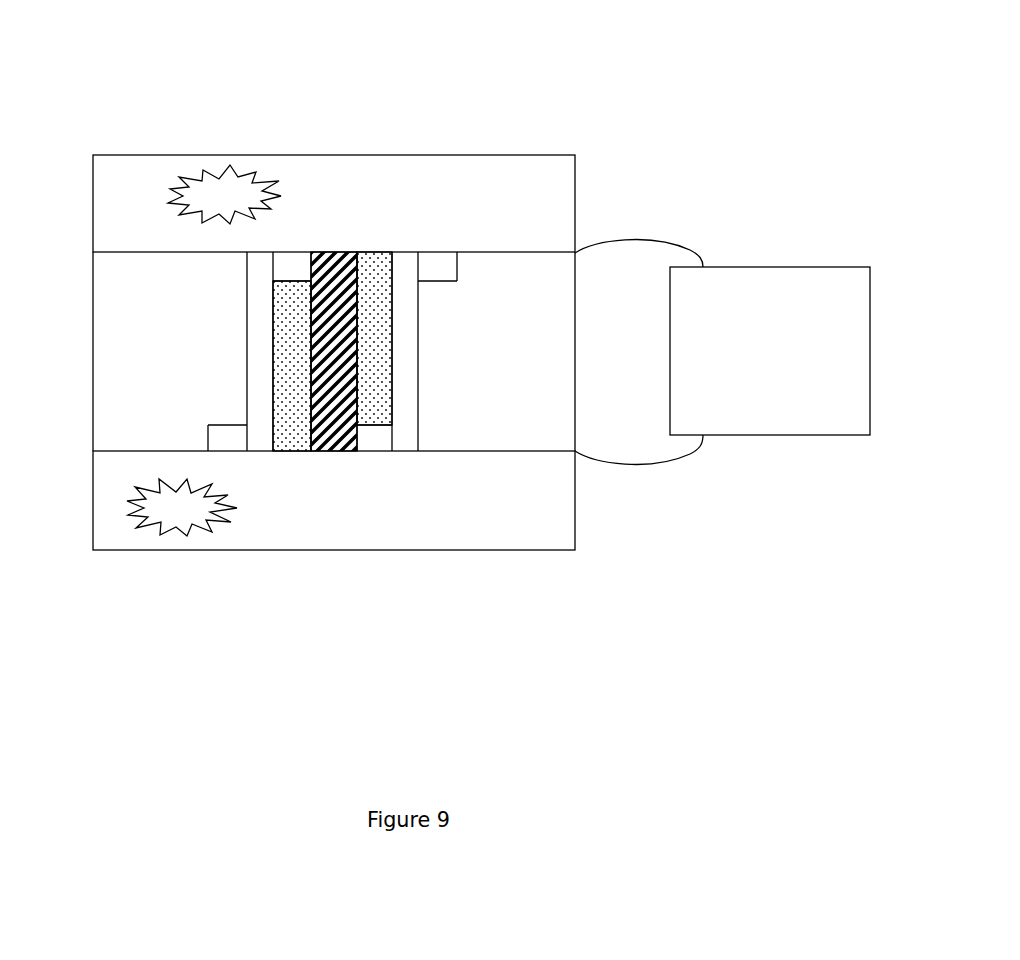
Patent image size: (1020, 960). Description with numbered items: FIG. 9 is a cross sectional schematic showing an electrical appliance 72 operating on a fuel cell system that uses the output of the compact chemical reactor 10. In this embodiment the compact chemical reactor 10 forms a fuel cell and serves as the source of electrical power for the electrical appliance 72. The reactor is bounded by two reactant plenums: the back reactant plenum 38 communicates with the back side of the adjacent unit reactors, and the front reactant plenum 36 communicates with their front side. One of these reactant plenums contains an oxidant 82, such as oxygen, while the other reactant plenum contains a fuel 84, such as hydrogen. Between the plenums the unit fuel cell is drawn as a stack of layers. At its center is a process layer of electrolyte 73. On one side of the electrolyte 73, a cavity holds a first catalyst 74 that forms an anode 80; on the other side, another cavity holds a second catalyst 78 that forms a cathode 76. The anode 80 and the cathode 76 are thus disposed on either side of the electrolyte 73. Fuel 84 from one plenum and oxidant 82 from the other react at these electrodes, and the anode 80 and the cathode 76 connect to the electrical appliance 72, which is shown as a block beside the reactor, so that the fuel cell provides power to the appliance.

The compact chemical reactor 10 is at (600, 542).
The front reactant plenum 36 is at (177, 550).
The back reactant plenum 38 is at (130, 155).
The electrical appliance 72 is at (762, 265).
The electrolyte 73 is at (340, 430).
The first catalyst 74 is at (295, 433).
The cathode 76 is at (357, 338).
The second catalyst 78 is at (380, 270).
The anode 80 is at (308, 433).
The oxidant 82 is at (224, 194).
The fuel 84 is at (182, 507).